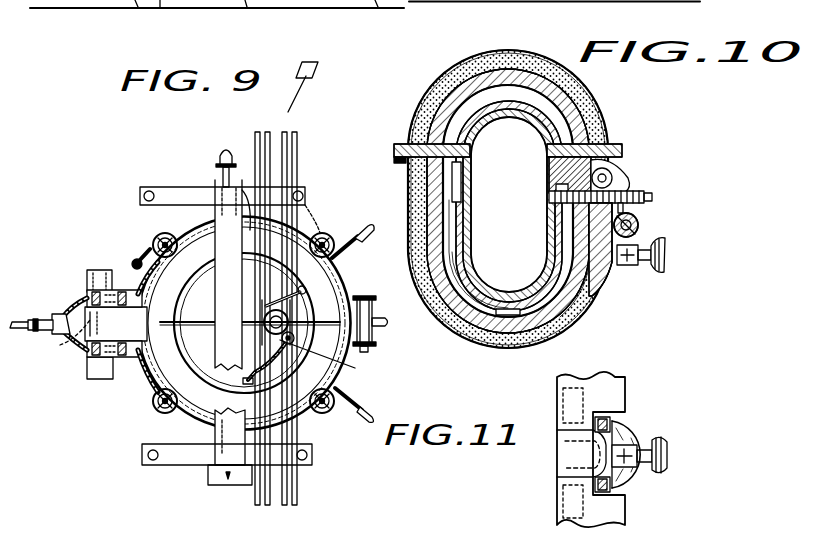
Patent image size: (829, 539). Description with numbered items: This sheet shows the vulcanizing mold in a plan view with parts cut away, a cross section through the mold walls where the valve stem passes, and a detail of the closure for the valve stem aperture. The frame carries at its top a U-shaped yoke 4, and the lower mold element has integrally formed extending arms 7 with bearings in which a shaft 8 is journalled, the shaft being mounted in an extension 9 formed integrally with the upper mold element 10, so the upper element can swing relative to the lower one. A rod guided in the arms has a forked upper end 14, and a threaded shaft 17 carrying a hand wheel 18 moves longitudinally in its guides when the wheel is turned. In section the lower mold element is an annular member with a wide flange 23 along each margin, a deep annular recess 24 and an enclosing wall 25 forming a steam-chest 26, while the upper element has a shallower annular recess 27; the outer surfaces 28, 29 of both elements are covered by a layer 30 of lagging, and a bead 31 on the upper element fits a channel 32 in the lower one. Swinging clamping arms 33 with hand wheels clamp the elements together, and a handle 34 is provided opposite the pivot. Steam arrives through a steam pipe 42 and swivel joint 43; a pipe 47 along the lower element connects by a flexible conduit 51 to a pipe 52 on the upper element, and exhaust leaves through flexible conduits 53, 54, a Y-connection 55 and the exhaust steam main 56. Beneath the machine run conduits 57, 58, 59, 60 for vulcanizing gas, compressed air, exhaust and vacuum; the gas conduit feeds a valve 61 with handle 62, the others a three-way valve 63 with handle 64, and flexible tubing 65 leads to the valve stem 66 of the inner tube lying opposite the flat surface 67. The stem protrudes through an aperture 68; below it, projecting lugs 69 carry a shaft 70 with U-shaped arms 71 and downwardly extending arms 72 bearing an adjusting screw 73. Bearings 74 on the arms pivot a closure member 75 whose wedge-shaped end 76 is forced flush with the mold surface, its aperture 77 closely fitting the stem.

In FIG. 9, the U-shaped member or yoke 4 is at (232, 322).
In FIG. 9, the extending arms 7 is at (96, 270).
In FIG. 9, the shaft 8 is at (100, 362).
In FIG. 9, the extension 9 is at (80, 330).
In FIG. 9, the upper mold element 10 is at (165, 447).
In FIG. 9, the forked upper end 14 is at (88, 297).
In FIG. 9, the shaft 17 is at (205, 330).
In FIG. 9, the hand wheel 18 is at (366, 296).
In FIG. 10, the flange 23 is at (400, 157).
In FIG. 10, the annular recess 24 is at (463, 300).
In FIG. 10, the enclosing wall 25 is at (508, 332).
In FIG. 10, the steam-chest 26 is at (585, 295).
In FIG. 10, the annular recess 27 is at (520, 100).
In FIG. 10, the outer surface 28 is at (447, 300).
In FIG. 10, the outer surface 29 is at (475, 75).
In FIG. 10, the layer of lagging material 30 is at (592, 95).
In FIG. 10, the bead 31 is at (458, 152).
In FIG. 10, the channel 32 is at (450, 170).
In FIG. 9, the swinging clamping arms 33 is at (327, 235).
In FIG. 9, the handle 34 is at (380, 315).
In FIG. 9, the steam pipe 42 is at (222, 173).
In FIG. 9, the swivel joint 43 is at (218, 155).
In FIG. 9, the pipe 47 is at (180, 222).
In FIG. 9, the flexible conduit 51 is at (137, 259).
In FIG. 9, the pipe 52 is at (305, 205).
In FIG. 9, the flexible conduit 53 is at (138, 290).
In FIG. 9, the flexible conduit 54 is at (148, 375).
In FIG. 9, the Y-connection 55 is at (58, 316).
In FIG. 9, the exhaust steam main 56 is at (28, 330).
In FIG. 9, the conduit 57 is at (296, 132).
In FIG. 9, the conduit 58 is at (285, 132).
In FIG. 9, the conduit 59 is at (268, 132).
In FIG. 9, the conduit 60 is at (258, 132).
In FIG. 9, the valve 61 is at (356, 368).
In FIG. 9, the handle 62 is at (360, 396).
In FIG. 9, the three-way valve 63 is at (272, 305).
In FIG. 9, the handle 64 is at (356, 240).
In FIG. 9, the flexible tubing 65 is at (244, 362).
In FIG. 10, the valve stem 66 is at (650, 191).
In FIG. 10, the flat surface 67 is at (605, 262).
In FIG. 11, the aperture 68 is at (560, 465).
In FIG. 10, the projecting lugs 69 is at (639, 218).
In FIG. 10, the shaft 70 is at (639, 226).
In FIG. 11, the shaft 70 is at (612, 488).
In FIG. 10, the U-shaped arms 71 is at (612, 178).
In FIG. 11, the U-shaped arms 71 is at (628, 440).
In FIG. 10, the downwardly extending arms 72 is at (630, 266).
In FIG. 10, the adjusting screw 73 is at (666, 260).
In FIG. 10, the bearings 74 is at (614, 160).
In FIG. 11, the bearings 74 is at (612, 418).
In FIG. 10, the closure member 75 is at (549, 168).
In FIG. 11, the closure member 75 is at (578, 450).
In FIG. 11, the wedge-shaped end 76 is at (557, 428).
In FIG. 10, the aperture 77 is at (556, 187).